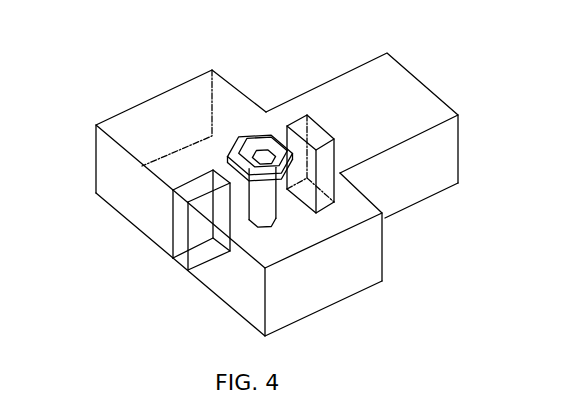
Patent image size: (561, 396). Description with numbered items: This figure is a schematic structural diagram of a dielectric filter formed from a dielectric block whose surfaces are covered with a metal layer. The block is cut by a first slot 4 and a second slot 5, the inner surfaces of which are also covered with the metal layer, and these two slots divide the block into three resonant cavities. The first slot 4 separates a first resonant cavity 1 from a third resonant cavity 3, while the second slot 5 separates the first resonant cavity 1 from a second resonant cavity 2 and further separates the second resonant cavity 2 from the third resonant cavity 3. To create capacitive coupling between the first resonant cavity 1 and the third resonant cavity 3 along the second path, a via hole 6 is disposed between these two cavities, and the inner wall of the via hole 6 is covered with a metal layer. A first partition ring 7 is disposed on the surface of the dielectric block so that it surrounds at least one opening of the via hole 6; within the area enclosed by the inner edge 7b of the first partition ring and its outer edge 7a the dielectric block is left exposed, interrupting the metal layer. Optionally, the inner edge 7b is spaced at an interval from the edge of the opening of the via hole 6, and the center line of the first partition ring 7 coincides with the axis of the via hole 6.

The first resonant cavity 1 is at (162, 142).
The second resonant cavity 2 is at (402, 92).
The third resonant cavity 3 is at (327, 227).
The first slot 4 is at (193, 187).
The second slot 5 is at (317, 137).
The via hole 6 is at (262, 158).
The first partition ring 7 is at (268, 133).
The outer edge of the first partition ring 7a is at (251, 146).
The inner edge of the first partition ring 7b is at (274, 147).